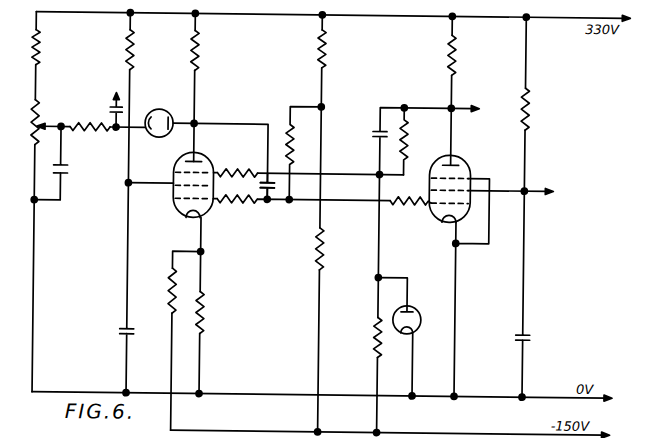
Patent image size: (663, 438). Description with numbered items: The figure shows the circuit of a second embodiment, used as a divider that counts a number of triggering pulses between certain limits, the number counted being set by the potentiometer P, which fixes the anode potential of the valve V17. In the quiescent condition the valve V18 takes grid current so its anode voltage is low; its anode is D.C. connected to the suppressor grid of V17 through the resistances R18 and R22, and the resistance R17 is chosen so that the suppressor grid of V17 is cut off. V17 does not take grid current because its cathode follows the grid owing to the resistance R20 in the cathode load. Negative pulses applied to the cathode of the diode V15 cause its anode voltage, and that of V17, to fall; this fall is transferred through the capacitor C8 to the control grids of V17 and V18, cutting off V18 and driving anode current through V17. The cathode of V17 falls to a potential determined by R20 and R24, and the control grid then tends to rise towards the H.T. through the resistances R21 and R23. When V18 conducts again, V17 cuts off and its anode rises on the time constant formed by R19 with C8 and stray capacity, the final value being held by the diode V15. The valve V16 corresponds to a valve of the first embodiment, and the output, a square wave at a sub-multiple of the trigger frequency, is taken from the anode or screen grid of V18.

The potentiometer P is at (44, 122).
The diode V15 is at (163, 115).
The valve V16 is at (410, 337).
The valve V17 is at (201, 178).
The valve V18 is at (457, 184).
The resistance R17 is at (358, 337).
The resistance R18 is at (420, 141).
The resistance R19 is at (211, 50).
The resistance R20 is at (216, 312).
The resistance R21 is at (304, 152).
The resistance R22 is at (235, 166).
The resistance R23 is at (339, 49).
The resistance R24 is at (155, 290).
The capacitor C8 is at (256, 186).